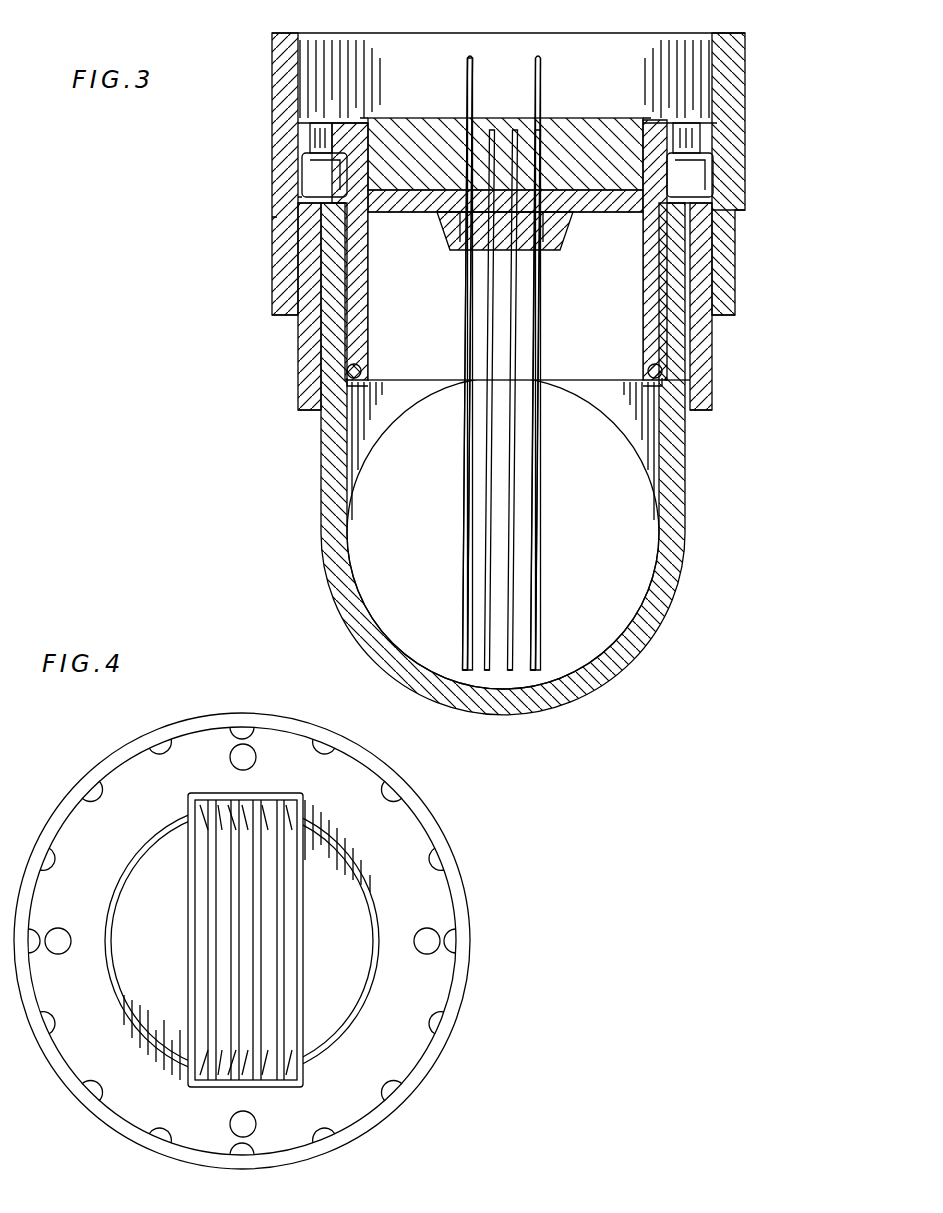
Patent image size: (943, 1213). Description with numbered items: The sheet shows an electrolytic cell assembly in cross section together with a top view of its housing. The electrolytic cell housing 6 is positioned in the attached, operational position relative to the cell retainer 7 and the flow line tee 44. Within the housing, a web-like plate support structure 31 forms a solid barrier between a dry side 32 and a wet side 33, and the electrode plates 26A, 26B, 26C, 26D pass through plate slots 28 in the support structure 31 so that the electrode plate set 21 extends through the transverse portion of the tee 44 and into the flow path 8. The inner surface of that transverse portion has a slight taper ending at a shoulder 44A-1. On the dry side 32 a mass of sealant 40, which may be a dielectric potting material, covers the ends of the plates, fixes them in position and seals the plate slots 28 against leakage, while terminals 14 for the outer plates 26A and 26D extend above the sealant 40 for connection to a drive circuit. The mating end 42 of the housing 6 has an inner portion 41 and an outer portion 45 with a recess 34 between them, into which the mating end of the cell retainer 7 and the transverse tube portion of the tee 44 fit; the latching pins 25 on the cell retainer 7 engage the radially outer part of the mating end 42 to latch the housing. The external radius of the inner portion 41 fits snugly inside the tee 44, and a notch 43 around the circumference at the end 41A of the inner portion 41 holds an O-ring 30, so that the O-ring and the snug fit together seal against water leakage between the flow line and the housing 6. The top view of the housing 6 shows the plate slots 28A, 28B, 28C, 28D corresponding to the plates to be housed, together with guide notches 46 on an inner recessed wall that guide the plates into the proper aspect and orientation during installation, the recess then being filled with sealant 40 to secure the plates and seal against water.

In FIG. 3, the terminals 14 is at (536, 58).
In FIG. 3, the dry side 32 is at (621, 108).
In FIG. 3, the plate support structure 31 is at (580, 193).
In FIG. 4, the plate support structure 31 is at (356, 884).
In FIG. 3, the sealant 40 is at (625, 150).
In FIG. 3, the recess 34 is at (300, 158).
In FIG. 3, the outer portion 45 is at (296, 200).
In FIG. 3, the inner portion 41 is at (345, 192).
In FIG. 3, the mating end 42 is at (733, 203).
In FIG. 3, the latching pins 25 is at (715, 226).
In FIG. 3, the plate slots 28 is at (462, 252).
In FIG. 3, the wet side 33 is at (505, 296).
In FIG. 3, the notch 43 is at (359, 367).
In FIG. 3, the end of inner portion 41A is at (666, 342).
In FIG. 3, the O-ring 30 is at (666, 372).
In FIG. 3, the cell retainer 7 is at (300, 392).
In FIG. 3, the shoulder 44A-1 is at (345, 384).
In FIG. 3, the electrode plate 26A is at (466, 480).
In FIG. 3, the electrode plate 26B is at (487, 542).
In FIG. 3, the electrode plate 26C is at (518, 494).
In FIG. 3, the electrode plate 26D is at (540, 550).
In FIG. 3, the electrode plate set 21 is at (550, 462).
In FIG. 3, the flow path 8 is at (503, 533).
In FIG. 3, the flow line tee 44 is at (322, 522).
In FIG. 4, the guide notches 46 is at (272, 806).
In FIG. 4, the electrolytic cell housing 6 is at (460, 822).
In FIG. 4, the plate slot 28A is at (283, 908).
In FIG. 4, the plate slot 28B is at (260, 948).
In FIG. 4, the plate slot 28C is at (232, 898).
In FIG. 4, the plate slot 28D is at (210, 964).